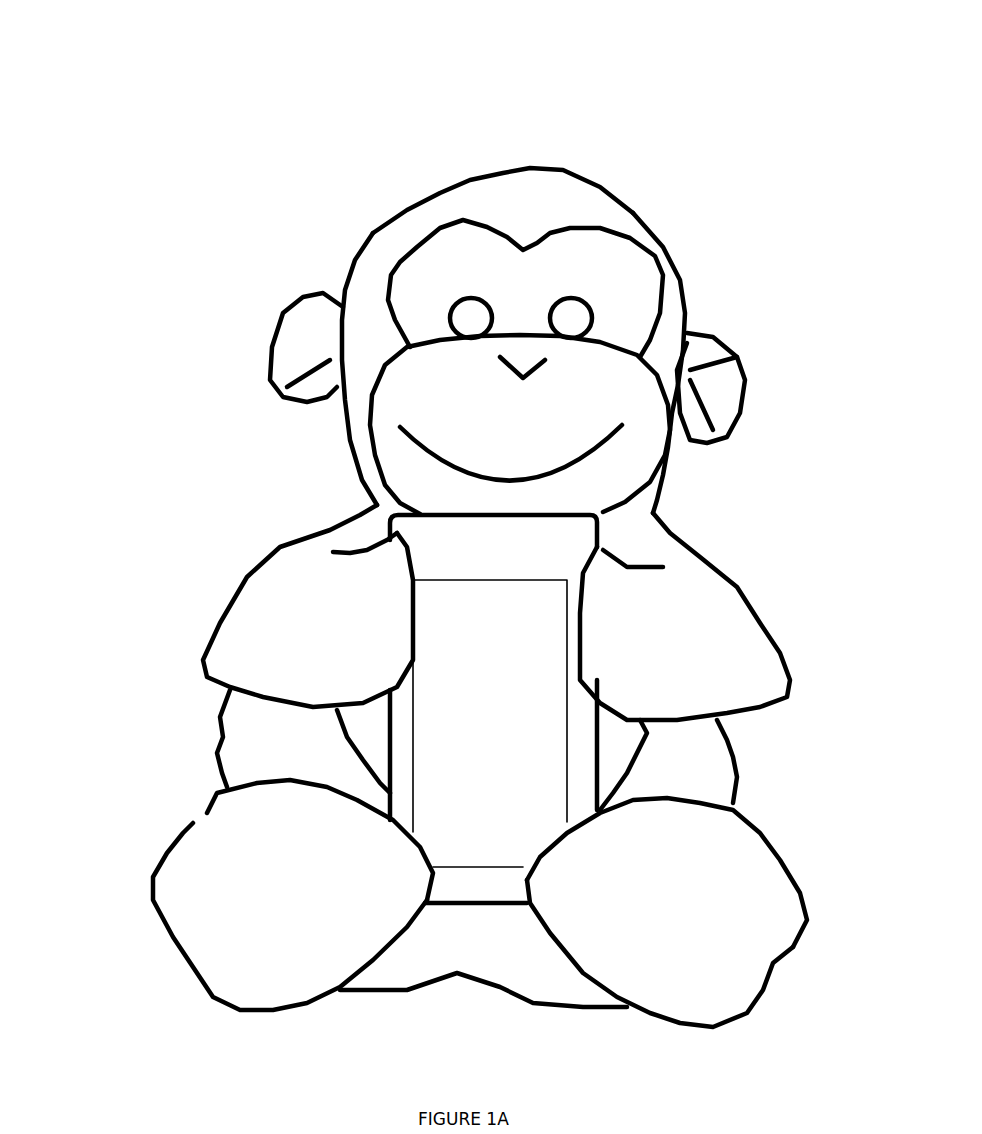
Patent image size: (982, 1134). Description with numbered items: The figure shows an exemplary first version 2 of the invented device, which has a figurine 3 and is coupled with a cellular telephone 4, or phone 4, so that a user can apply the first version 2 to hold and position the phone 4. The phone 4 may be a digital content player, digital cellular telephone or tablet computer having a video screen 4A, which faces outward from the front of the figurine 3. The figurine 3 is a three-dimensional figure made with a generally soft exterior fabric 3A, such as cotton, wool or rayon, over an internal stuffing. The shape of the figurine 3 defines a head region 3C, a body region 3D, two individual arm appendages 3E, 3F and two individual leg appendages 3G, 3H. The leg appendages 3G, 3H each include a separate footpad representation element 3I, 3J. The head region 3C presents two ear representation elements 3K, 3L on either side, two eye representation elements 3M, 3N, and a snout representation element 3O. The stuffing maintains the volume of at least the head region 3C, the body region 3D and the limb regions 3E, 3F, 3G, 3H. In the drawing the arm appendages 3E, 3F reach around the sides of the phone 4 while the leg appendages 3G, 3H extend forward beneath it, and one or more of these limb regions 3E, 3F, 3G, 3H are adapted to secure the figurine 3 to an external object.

The first version 2 is at (214, 174).
The figurine 3 is at (580, 1010).
The exterior fabric 3A is at (612, 187).
The head region 3C is at (467, 183).
The body region 3D is at (217, 727).
The arm appendage 3E is at (253, 573).
The arm appendage 3F is at (737, 587).
The leg appendage 3G is at (183, 953).
The leg appendage 3H is at (773, 967).
The footpad representation element 3I is at (250, 898).
The footpad representation element 3J is at (730, 897).
The ear representation element 3K is at (270, 358).
The ear representation element 3L is at (747, 373).
The eye representation element 3M is at (457, 300).
The eye representation element 3N is at (593, 320).
The snout representation element 3O is at (670, 443).
The cellular telephone 4 is at (387, 710).
The video screen 4A is at (567, 710).